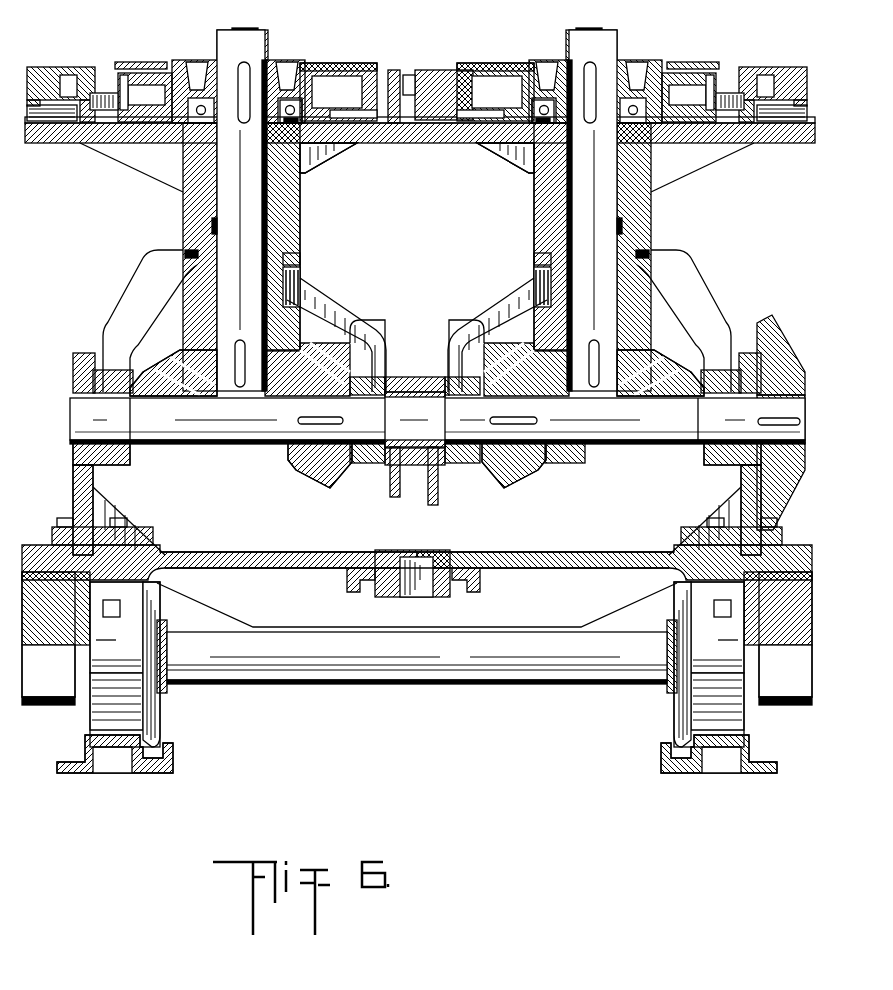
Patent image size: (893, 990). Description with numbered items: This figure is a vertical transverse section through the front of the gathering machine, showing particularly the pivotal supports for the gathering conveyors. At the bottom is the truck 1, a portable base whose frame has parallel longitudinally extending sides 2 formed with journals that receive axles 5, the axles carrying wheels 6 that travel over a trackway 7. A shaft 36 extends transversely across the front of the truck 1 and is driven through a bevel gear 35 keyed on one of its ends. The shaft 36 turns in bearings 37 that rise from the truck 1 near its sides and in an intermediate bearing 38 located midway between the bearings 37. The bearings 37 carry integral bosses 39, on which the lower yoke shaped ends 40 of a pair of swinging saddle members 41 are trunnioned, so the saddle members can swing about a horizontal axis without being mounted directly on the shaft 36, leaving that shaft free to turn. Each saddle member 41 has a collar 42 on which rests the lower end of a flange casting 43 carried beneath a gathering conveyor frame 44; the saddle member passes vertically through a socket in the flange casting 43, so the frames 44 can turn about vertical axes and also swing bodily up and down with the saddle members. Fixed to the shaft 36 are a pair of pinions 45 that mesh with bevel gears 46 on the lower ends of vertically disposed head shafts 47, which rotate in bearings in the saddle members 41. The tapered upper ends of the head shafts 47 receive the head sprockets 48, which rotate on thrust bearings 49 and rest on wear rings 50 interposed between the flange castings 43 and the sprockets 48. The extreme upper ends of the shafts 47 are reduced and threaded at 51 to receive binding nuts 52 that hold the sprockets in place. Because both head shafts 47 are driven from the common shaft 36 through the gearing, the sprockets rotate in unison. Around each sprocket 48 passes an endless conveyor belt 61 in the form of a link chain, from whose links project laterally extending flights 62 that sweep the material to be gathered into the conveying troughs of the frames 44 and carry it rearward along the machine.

The truck 1 is at (150, 565).
The sides 2 is at (57, 640).
The axles 5 is at (417, 658).
The wheels 6 is at (153, 717).
The trackway 7 is at (138, 760).
The bevel gear 35 is at (770, 320).
The shaft 36 is at (628, 438).
The bearings 37 is at (93, 488).
The intermediate bearing 38 is at (390, 490).
The bosses 39 is at (120, 451).
The yoke shaped ends 40 is at (352, 323).
The saddle members 41 is at (300, 277).
The collars 42 is at (298, 252).
The flange castings 43 is at (302, 188).
The gathering conveyor frames 44 is at (43, 143).
The pinions 45 is at (293, 453).
The bevel gears 46 is at (180, 397).
The head shafts 47 is at (227, 240).
The head sprockets 48 is at (320, 70).
The thrust bearings 49 is at (296, 65).
The wear rings 50 is at (333, 160).
The threaded end 51 is at (217, 40).
The binding nuts 52 is at (262, 40).
The endless conveyor belt 61 is at (127, 63).
The flights 62 is at (50, 70).